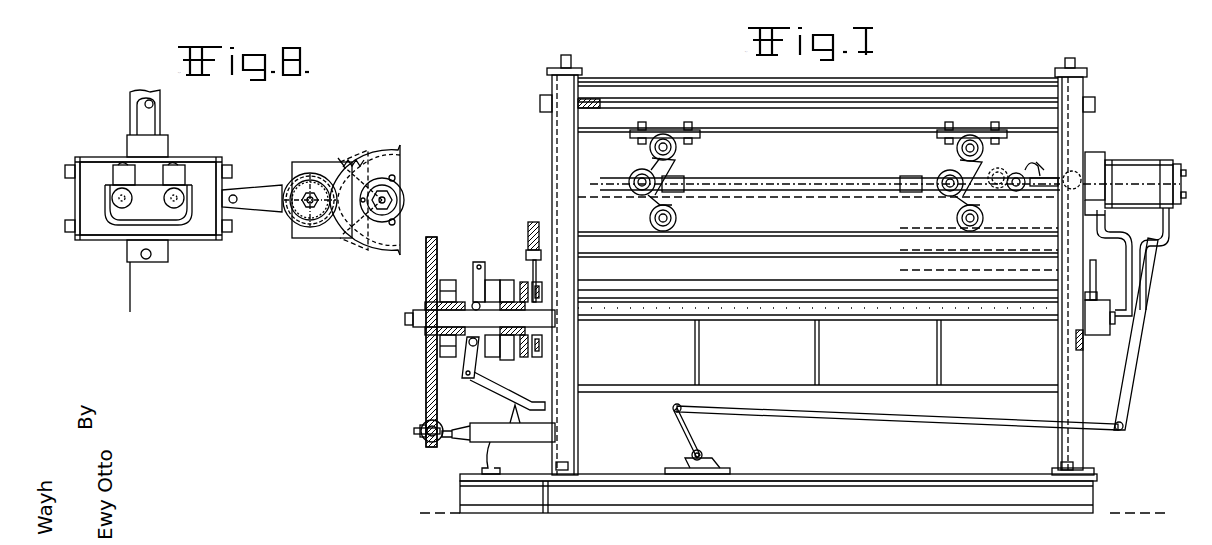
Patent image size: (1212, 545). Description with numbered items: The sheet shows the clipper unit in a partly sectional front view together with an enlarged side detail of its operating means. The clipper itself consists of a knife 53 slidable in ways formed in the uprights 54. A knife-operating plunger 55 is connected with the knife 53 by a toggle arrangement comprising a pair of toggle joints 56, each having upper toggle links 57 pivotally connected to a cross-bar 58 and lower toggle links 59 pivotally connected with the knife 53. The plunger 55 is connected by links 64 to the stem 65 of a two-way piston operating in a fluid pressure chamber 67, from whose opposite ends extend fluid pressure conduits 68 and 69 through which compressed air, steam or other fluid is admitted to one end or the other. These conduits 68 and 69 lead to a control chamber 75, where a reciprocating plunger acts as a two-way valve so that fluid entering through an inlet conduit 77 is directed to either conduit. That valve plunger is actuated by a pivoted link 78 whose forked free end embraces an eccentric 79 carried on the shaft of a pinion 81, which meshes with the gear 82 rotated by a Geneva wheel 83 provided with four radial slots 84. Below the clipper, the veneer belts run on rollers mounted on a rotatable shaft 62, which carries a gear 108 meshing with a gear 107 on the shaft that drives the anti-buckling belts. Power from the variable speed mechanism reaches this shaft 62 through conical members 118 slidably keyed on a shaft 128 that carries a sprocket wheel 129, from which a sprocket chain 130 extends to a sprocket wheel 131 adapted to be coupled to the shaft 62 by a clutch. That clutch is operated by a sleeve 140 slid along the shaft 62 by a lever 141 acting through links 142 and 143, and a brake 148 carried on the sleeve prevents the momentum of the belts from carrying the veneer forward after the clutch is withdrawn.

In FIG. 7, the knife 53 is at (781, 283).
In FIG. 8, the uprights 54 is at (130, 288).
In FIG. 7, the uprights 54 is at (556, 160).
In FIG. 7, the knife-operating plunger 55 is at (790, 180).
In FIG. 7, the toggle joints 56 is at (670, 170).
In FIG. 7, the upper toggle links 57 is at (648, 150).
In FIG. 7, the cross-bar 58 is at (790, 128).
In FIG. 7, the lower toggle links 59 is at (652, 205).
In FIG. 7, the rotatable shaft 62 is at (440, 316).
In FIG. 7, the links 64 is at (990, 183).
In FIG. 7, the stem 65 is at (1095, 162).
In FIG. 7, the fluid pressure chamber 67 is at (1162, 170).
In FIG. 8, the fluid pressure conduit 68 is at (178, 165).
In FIG. 7, the fluid pressure conduit 68 is at (1108, 244).
In FIG. 8, the fluid pressure conduit 69 is at (120, 165).
In FIG. 7, the fluid pressure conduit 69 is at (1168, 226).
In FIG. 8, the control chamber 75 is at (200, 168).
In FIG. 7, the control chamber 75 is at (1098, 320).
In FIG. 8, the inlet conduit 77 is at (155, 118).
In FIG. 7, the inlet conduit 77 is at (1096, 282).
In FIG. 8, the pivoted link 78 is at (252, 203).
In FIG. 8, the eccentric 79 is at (289, 218).
In FIG. 8, the pinion 81 is at (313, 222).
In FIG. 8, the gear 82 is at (366, 240).
In FIG. 8, the Geneva wheel 83 is at (378, 148).
In FIG. 8, the radial slots 84 is at (350, 160).
In FIG. 7, the gear 107 is at (534, 222).
In FIG. 7, the gear 108 is at (545, 340).
In FIG. 7, the conical member 118 is at (512, 412).
In FIG. 7, the shaft 128 is at (414, 431).
In FIG. 7, the sprocket wheel 129 is at (428, 441).
In FIG. 7, the sprocket chain 130 is at (431, 237).
In FIG. 7, the sprocket wheel 131 is at (426, 296).
In FIG. 7, the sleeve 140 is at (488, 345).
In FIG. 7, the lever 141 is at (1137, 392).
In FIG. 7, the link 142 is at (860, 415).
In FIG. 7, the link 143 is at (480, 382).
In FIG. 7, the brake 148 is at (503, 285).